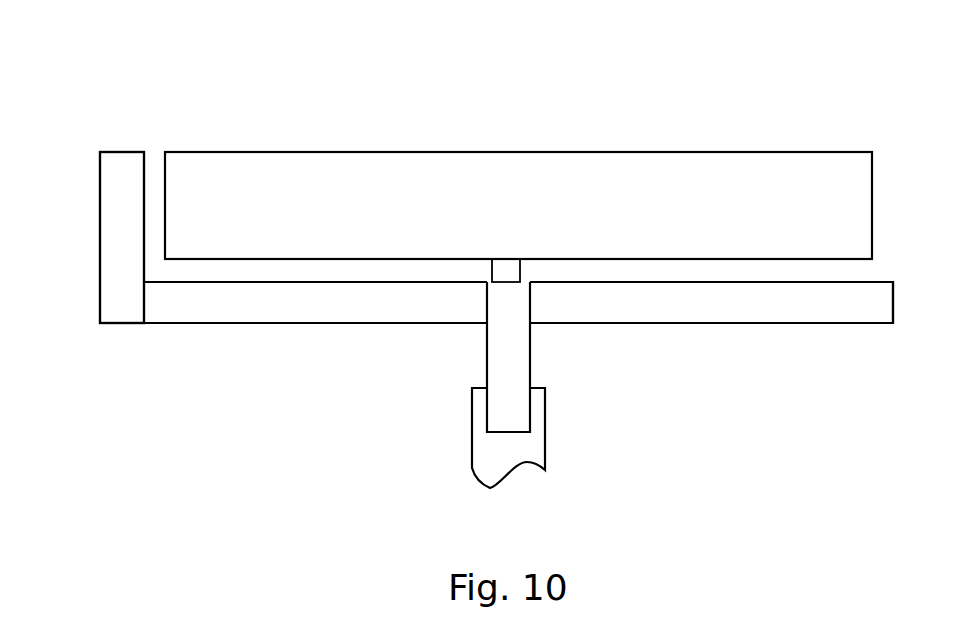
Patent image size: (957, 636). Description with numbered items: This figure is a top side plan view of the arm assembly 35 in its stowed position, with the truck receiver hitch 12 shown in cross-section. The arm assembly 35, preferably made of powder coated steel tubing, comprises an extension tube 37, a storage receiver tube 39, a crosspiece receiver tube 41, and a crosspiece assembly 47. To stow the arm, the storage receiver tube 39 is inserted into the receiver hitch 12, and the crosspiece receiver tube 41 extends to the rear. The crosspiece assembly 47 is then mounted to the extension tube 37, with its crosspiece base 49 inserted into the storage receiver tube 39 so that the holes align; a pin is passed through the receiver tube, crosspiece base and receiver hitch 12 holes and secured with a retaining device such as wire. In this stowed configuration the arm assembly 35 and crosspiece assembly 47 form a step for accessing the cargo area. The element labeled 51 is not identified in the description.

The receiver hitch 12 is at (545, 432).
The arm assembly 35 is at (737, 342).
The extension tube 37 is at (280, 308).
The storage receiver tube 39 is at (503, 350).
The crosspiece receiver tube 41 is at (118, 282).
The crosspiece assembly 47 is at (748, 133).
The crosspiece base 49 is at (503, 273).
The upper plate 51 is at (368, 180).